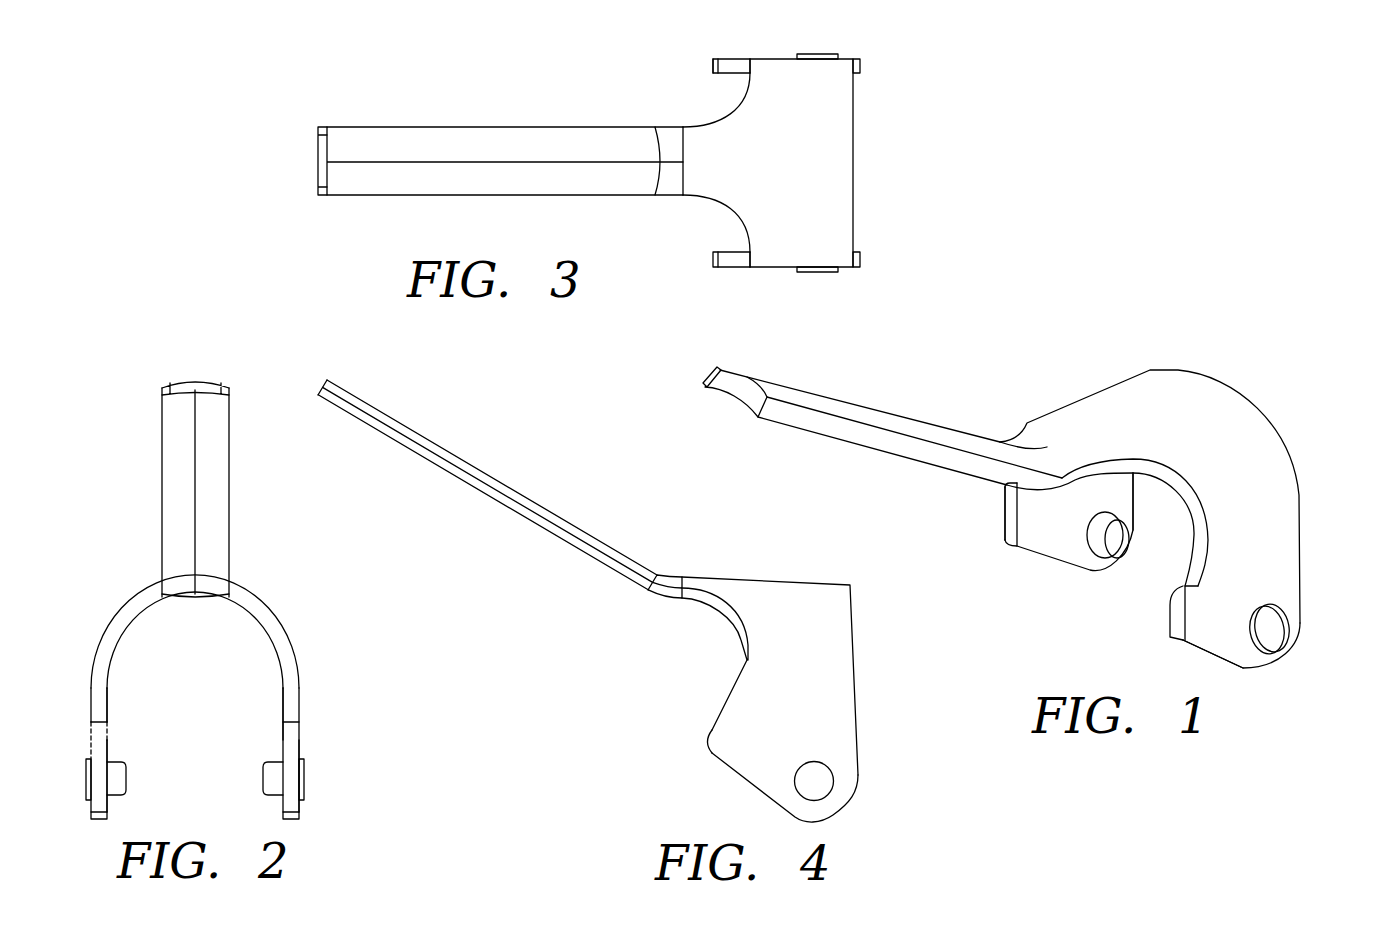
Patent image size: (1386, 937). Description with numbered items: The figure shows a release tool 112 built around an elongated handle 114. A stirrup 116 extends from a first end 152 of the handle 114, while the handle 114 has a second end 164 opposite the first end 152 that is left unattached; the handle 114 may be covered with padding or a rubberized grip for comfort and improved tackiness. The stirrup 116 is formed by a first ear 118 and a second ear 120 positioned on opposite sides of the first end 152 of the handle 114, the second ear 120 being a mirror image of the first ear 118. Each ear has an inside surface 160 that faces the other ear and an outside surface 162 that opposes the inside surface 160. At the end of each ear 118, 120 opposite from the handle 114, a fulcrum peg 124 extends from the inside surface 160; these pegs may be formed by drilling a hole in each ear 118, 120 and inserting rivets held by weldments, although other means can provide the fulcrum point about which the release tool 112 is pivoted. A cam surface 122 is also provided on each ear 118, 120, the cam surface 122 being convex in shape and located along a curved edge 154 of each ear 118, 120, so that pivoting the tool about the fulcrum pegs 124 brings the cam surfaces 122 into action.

In FIG. 3, the release tool 112 is at (650, 167).
In FIG. 2, the release tool 112 is at (201, 620).
In FIG. 4, the release tool 112 is at (617, 582).
In FIG. 1, the release tool 112 is at (1036, 500).
In FIG. 3, the elongated handle 114 is at (496, 163).
In FIG. 2, the elongated handle 114 is at (158, 486).
In FIG. 4, the elongated handle 114 is at (487, 465).
In FIG. 1, the elongated handle 114 is at (882, 403).
In FIG. 3, the stirrup 116 is at (840, 157).
In FIG. 2, the stirrup 116 is at (278, 640).
In FIG. 4, the stirrup 116 is at (845, 676).
In FIG. 1, the stirrup 116 is at (1202, 390).
In FIG. 3, the first ear 118 is at (862, 65).
In FIG. 2, the first ear 118 is at (100, 819).
In FIG. 1, the first ear 118 is at (1117, 500).
In FIG. 3, the second ear 120 is at (862, 262).
In FIG. 2, the second ear 120 is at (295, 683).
In FIG. 4, the second ear 120 is at (843, 725).
In FIG. 1, the second ear 120 is at (1288, 547).
In FIG. 3, the cam surface 122 is at (712, 66).
In FIG. 2, the cam surface 122 is at (92, 806).
In FIG. 4, the cam surface 122 is at (711, 756).
In FIG. 1, the cam surface 122 is at (1008, 518).
In FIG. 2, the fulcrum peg 124 is at (118, 782).
In FIG. 4, the fulcrum peg 124 is at (818, 788).
In FIG. 1, the fulcrum peg 124 is at (1120, 540).
In FIG. 3, the first end 152 is at (655, 127).
In FIG. 2, the first end 152 is at (220, 562).
In FIG. 4, the first end 152 is at (640, 585).
In FIG. 1, the first end 152 is at (1008, 487).
In FIG. 3, the curved edge 154 is at (712, 63).
In FIG. 2, the curved edge 154 is at (108, 745).
In FIG. 4, the curved edge 154 is at (710, 730).
In FIG. 1, the curved edge 154 is at (1015, 553).
In FIG. 3, the inside surface 160 is at (727, 75).
In FIG. 2, the inside surface 160 is at (108, 703).
In FIG. 1, the inside surface 160 is at (1060, 553).
In FIG. 3, the outside surface 162 is at (750, 57).
In FIG. 2, the outside surface 162 is at (91, 693).
In FIG. 1, the outside surface 162 is at (1252, 662).
In FIG. 3, the second end 164 is at (367, 197).
In FIG. 2, the second end 164 is at (165, 392).
In FIG. 4, the second end 164 is at (327, 377).
In FIG. 1, the second end 164 is at (718, 366).